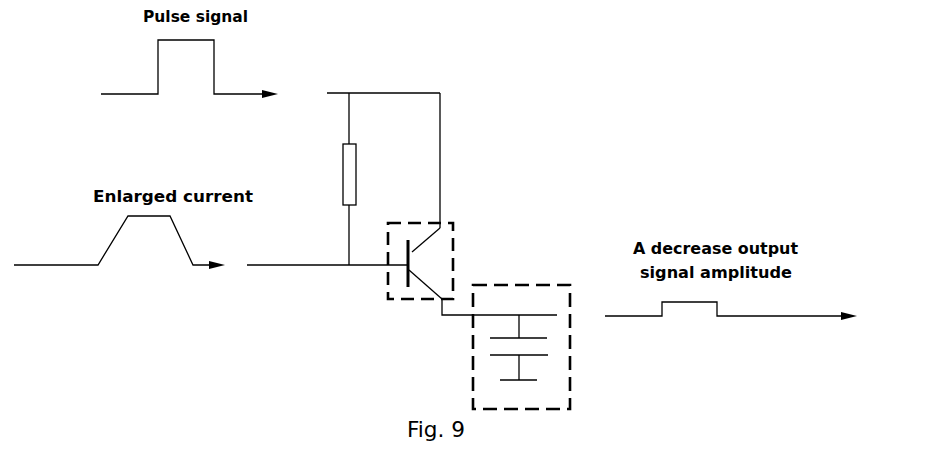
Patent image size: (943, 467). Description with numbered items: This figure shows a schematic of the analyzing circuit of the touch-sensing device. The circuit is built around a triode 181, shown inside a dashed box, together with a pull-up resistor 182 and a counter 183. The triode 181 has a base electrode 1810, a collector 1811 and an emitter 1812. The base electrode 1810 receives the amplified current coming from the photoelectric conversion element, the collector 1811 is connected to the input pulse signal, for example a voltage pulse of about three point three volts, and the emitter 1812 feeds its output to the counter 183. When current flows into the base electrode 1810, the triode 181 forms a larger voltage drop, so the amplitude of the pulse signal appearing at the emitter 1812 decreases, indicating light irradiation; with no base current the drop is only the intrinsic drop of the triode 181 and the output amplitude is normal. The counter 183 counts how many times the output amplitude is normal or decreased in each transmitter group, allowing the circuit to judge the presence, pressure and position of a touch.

The triode 181 is at (423, 253).
The base electrode 1810 is at (350, 307).
The collector 1811 is at (482, 233).
The emitter 1812 is at (482, 270).
The pull-up resistor 182 is at (412, 152).
The counter 183 is at (573, 299).